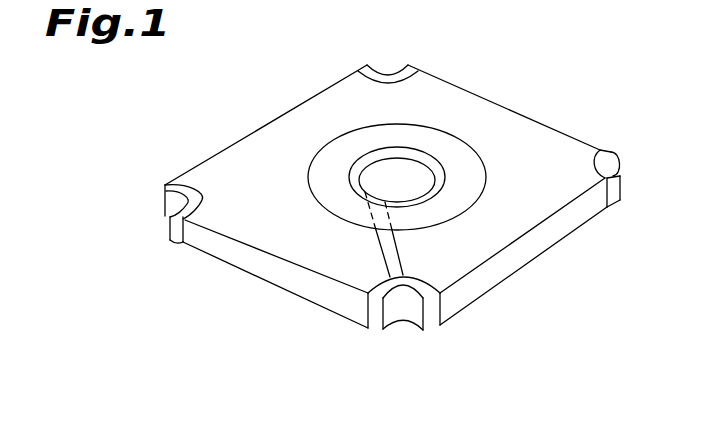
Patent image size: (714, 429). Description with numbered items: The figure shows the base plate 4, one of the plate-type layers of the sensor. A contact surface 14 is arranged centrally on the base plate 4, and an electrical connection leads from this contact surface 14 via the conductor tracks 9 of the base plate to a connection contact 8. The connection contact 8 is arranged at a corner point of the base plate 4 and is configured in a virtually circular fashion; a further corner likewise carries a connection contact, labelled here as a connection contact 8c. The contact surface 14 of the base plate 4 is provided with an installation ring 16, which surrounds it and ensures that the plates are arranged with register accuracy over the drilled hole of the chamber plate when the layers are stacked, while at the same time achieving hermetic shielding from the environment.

The base plate 4 is at (250, 167).
The installation ring 16 is at (457, 155).
The contact surface 14 is at (417, 182).
The conductor tracks of the base plate 9 is at (400, 255).
The connection contact of the base plate 8 is at (406, 330).
The connection contacts of the cover plate 8c is at (168, 202).